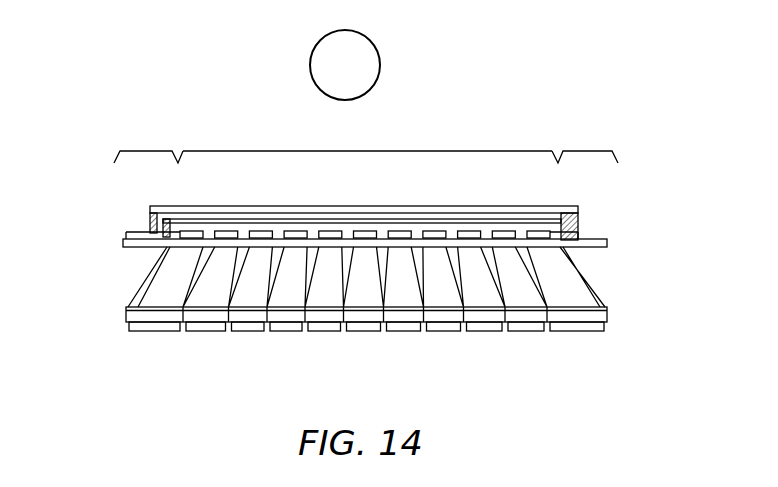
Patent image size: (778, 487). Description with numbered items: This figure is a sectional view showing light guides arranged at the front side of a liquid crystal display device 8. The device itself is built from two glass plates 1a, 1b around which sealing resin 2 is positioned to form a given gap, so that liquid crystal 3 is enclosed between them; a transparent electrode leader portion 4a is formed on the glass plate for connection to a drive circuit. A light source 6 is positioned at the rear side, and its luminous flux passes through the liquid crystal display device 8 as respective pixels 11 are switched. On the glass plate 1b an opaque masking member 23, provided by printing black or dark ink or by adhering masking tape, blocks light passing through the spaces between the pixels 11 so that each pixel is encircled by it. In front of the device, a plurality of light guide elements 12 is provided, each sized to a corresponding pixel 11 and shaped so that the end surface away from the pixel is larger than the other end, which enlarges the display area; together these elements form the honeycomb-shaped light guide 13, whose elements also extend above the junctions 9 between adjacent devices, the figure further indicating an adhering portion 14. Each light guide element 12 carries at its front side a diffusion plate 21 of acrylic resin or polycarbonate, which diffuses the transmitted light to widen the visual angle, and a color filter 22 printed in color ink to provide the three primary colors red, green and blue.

The light source 6 is at (381, 58).
The liquid crystal display device 8 is at (367, 138).
The junctions 9 is at (366, 144).
The glass plate 1a is at (578, 206).
The glass plate 1b is at (597, 245).
The sealing resin 2 is at (578, 225).
The liquid crystal 3 is at (355, 221).
The electrode leader portion 4a is at (135, 231).
The pixels 11 is at (191, 231).
The light guide elements 12 is at (363, 293).
The light guide 13 is at (598, 298).
The adhering portion 14 is at (497, 280).
The diffusion plate 21 is at (133, 320).
The color filters 22 is at (203, 332).
The opaque masking member 23 is at (158, 262).